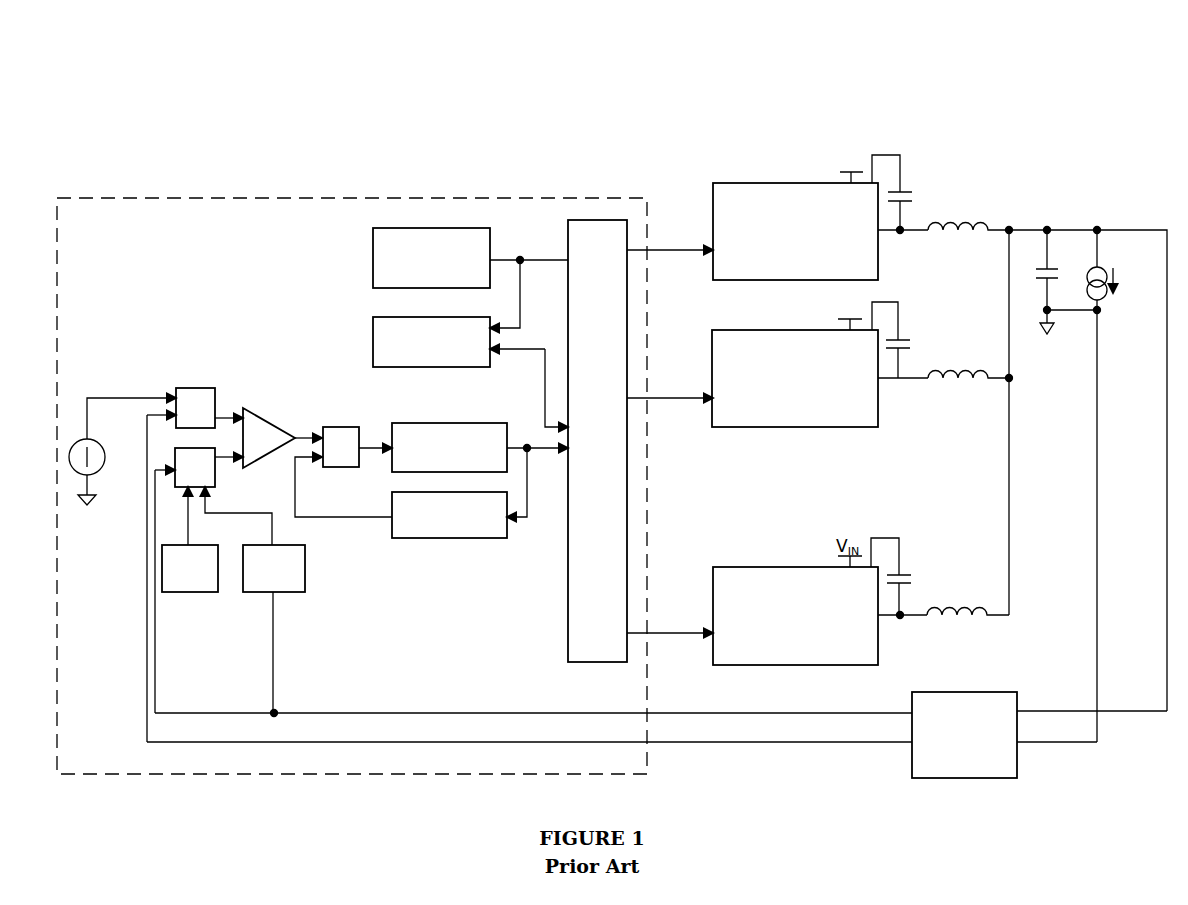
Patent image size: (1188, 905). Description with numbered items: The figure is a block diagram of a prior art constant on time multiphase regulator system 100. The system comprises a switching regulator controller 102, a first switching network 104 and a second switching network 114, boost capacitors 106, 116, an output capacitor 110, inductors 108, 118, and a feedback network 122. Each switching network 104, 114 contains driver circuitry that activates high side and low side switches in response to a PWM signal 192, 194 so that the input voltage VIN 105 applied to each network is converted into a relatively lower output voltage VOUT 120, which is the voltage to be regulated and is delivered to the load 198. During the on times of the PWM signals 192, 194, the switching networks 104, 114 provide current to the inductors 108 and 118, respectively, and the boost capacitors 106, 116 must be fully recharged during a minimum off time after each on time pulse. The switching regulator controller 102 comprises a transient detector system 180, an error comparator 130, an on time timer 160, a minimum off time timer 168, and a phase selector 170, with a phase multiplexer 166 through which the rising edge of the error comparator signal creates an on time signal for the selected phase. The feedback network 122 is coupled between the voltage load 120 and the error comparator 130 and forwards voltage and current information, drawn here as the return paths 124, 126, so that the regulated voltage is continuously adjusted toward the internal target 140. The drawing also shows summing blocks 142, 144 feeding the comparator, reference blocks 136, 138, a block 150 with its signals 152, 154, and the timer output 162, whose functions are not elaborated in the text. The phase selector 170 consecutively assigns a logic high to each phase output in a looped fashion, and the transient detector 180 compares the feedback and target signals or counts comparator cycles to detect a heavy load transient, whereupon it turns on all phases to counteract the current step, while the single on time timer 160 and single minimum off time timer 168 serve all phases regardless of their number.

The regulator system 100 is at (1052, 100).
The switching regulator controller 102 is at (162, 196).
The switching network 104 is at (720, 182).
The input voltage VIN 105 is at (842, 148).
The boost capacitor 106 is at (905, 182).
The inductor 108 is at (955, 222).
The output capacitor 110 is at (1047, 228).
The switching network 114 is at (740, 330).
The boost capacitor 116 is at (908, 330).
The inductor 118 is at (955, 370).
The output voltage VOUT 120 is at (1097, 228).
The feedback network 122 is at (966, 692).
The voltage feedback signal 124 is at (1025, 709).
The current feedback signal 126 is at (1025, 745).
The error comparator 130 is at (253, 406).
The reference block 136 is at (297, 593).
The offset block 138 is at (202, 593).
The internal target 140 is at (103, 472).
The first summer 142 is at (197, 388).
The second summer 144 is at (222, 465).
The compensator 150 is at (340, 427).
The error signal 152 is at (318, 432).
The feedback signal 154 is at (313, 467).
The on time timer 160 is at (440, 423).
The modulator output signal 162 is at (565, 455).
The phase multiplexer 166 is at (568, 605).
The minimum off time timer 168 is at (453, 540).
The phase selector 170 is at (373, 340).
The transient detector system 180 is at (373, 258).
The PWM signal 192 is at (668, 247).
The PWM signal 194 is at (668, 397).
The load 198 is at (1107, 300).